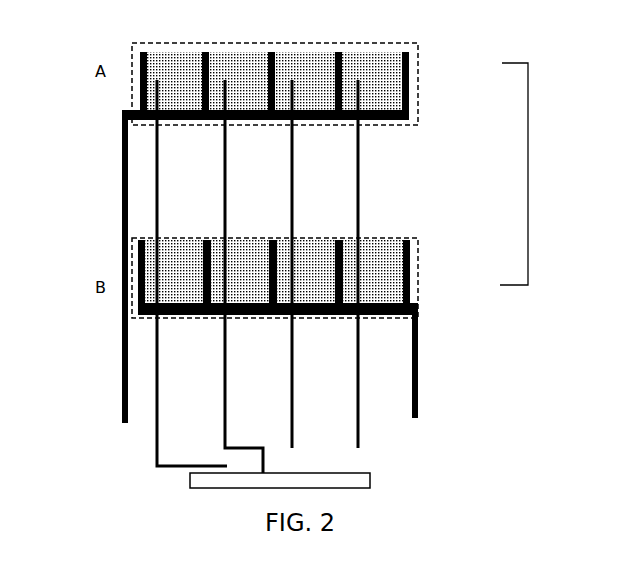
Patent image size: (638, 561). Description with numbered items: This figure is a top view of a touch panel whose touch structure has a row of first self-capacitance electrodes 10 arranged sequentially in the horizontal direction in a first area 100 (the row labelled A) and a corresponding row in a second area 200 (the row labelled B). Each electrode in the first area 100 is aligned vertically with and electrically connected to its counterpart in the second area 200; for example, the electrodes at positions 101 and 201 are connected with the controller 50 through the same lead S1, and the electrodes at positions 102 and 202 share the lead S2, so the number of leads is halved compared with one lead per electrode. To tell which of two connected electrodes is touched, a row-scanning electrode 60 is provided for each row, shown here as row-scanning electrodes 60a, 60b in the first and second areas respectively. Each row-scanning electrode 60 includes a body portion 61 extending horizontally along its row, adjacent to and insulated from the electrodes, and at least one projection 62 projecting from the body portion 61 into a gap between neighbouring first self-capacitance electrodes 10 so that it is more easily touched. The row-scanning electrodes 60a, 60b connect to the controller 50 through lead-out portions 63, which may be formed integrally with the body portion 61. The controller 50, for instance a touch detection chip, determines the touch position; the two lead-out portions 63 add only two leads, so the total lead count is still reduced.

The first self-capacitance electrode 10 is at (377, 67).
The first area 100 is at (418, 115).
The position of first self-capacitance electrode in first area 101 is at (168, 63).
The position of first self-capacitance electrode in first area 102 is at (228, 63).
The second area 200 is at (405, 237).
The position of first self-capacitance electrode in second area 201 is at (172, 267).
The position of first self-capacitance electrode in second area 202 is at (245, 267).
The row-scanning electrode 60 is at (532, 174).
The row-scanning electrode 60a is at (258, 237).
The row-scanning electrode 60b is at (418, 302).
The body portion 61 is at (188, 117).
The projection 62 is at (143, 82).
The lead-out portion 63 is at (72, 98).
The lead S1 is at (156, 432).
The lead S2 is at (223, 427).
The controller 50 is at (360, 482).